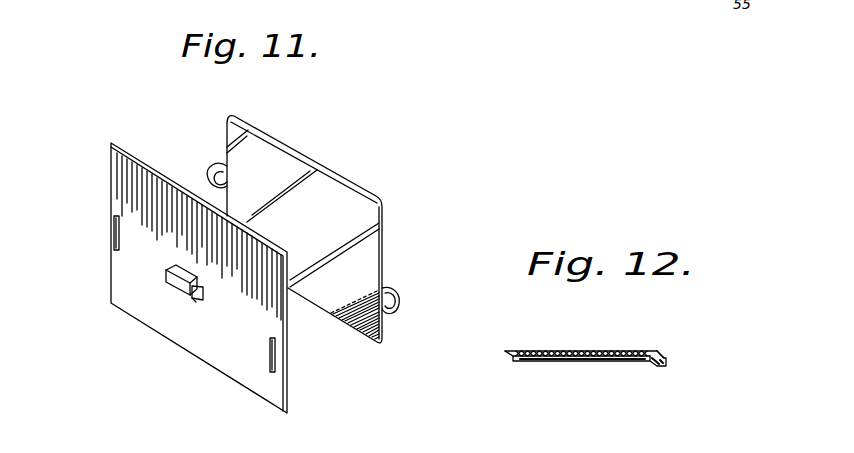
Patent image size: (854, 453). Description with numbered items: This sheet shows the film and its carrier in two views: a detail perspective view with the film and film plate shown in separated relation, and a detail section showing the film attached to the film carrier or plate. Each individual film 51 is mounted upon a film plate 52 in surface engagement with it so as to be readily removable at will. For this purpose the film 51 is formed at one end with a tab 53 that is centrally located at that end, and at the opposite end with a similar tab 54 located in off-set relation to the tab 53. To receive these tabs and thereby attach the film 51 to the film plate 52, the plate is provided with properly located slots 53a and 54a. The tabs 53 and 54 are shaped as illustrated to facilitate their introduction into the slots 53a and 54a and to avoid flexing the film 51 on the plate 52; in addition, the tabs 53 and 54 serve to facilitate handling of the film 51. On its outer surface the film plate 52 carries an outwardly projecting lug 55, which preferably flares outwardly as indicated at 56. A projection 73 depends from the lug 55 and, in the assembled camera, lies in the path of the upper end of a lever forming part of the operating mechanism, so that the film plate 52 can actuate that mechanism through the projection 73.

In FIG. 11, the film 51 is at (356, 197).
In FIG. 12, the film 51 is at (573, 350).
In FIG. 11, the film plate 52 is at (267, 391).
In FIG. 12, the film plate 52 is at (592, 365).
In FIG. 11, the tab 53 is at (213, 173).
In FIG. 11, the slot 53a is at (114, 230).
In FIG. 11, the tab 54 is at (398, 293).
In FIG. 12, the tab 54 is at (657, 370).
In FIG. 11, the slot 54a is at (277, 357).
In FIG. 12, the slot 54a is at (652, 355).
In FIG. 11, the lug 55 is at (202, 287).
In FIG. 11, the outwardly flaring portion 56 is at (181, 281).
In FIG. 11, the projection 73 is at (196, 300).